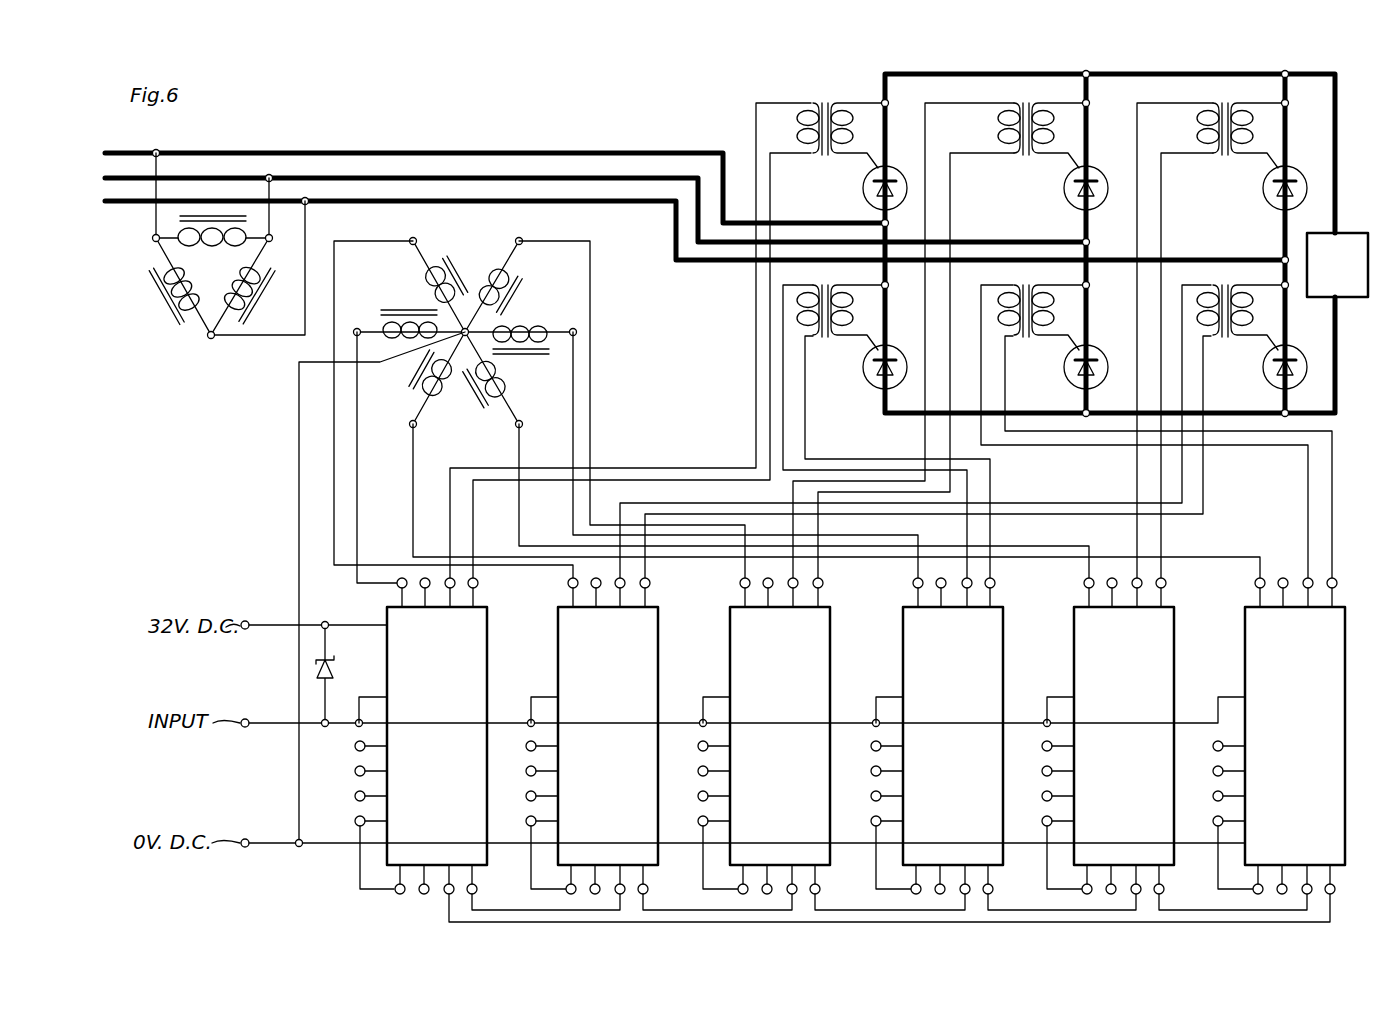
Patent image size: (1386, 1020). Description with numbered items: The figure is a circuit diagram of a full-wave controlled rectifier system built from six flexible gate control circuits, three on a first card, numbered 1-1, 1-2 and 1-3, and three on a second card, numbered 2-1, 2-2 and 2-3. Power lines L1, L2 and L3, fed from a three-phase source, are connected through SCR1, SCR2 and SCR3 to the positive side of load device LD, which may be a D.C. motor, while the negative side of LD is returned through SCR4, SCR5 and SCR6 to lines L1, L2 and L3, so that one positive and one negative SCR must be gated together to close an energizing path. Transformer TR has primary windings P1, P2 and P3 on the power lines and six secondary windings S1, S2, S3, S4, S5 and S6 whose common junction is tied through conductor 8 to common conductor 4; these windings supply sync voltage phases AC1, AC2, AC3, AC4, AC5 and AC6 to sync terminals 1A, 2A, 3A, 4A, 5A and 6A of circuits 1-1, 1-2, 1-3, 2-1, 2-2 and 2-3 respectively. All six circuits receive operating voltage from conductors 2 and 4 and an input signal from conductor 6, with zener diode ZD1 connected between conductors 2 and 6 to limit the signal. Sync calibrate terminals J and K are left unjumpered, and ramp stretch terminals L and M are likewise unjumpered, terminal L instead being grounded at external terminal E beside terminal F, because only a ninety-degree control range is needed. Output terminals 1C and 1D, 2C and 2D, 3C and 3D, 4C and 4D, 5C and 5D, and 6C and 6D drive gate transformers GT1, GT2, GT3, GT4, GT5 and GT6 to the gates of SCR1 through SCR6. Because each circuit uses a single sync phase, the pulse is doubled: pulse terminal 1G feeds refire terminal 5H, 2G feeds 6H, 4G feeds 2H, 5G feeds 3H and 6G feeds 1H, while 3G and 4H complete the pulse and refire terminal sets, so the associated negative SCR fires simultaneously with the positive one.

The power line L1 is at (476, 182).
The power line L2 is at (577, 204).
The power line L3 is at (676, 225).
The primary winding P1 is at (236, 245).
The primary winding P2 is at (275, 287).
The primary winding P3 is at (160, 296).
The transformer TR is at (466, 321).
The secondary winding S1 is at (404, 342).
The secondary winding S2 is at (490, 280).
The secondary winding S3 is at (506, 378).
The secondary winding S4 is at (530, 328).
The secondary winding S5 is at (446, 378).
The secondary winding S6 is at (430, 285).
The sync voltage phase AC1 is at (352, 328).
The sync voltage phase AC2 is at (515, 237).
The sync voltage phase AC3 is at (534, 427).
The sync voltage phase AC4 is at (570, 328).
The sync voltage phase AC5 is at (408, 428).
The sync voltage phase AC6 is at (428, 227).
The conductor 8 is at (299, 462).
The gate transformer GT1 is at (826, 92).
The gate transformer GT2 is at (1008, 96).
The gate transformer GT3 is at (1224, 96).
The gate transformer GT4 is at (837, 278).
The gate transformer GT5 is at (1019, 280).
The gate transformer GT6 is at (1229, 281).
The silicon controlled rectifier SCR1 is at (862, 186).
The silicon controlled rectifier SCR2 is at (1063, 186).
The silicon controlled rectifier SCR3 is at (1262, 187).
The silicon controlled rectifier SCR4 is at (866, 373).
The silicon controlled rectifier SCR5 is at (1066, 373).
The silicon controlled rectifier SCR6 is at (1266, 373).
The load device LD is at (1352, 233).
The conductor 2 is at (272, 622).
The conductor 6 is at (274, 718).
The common conductor 4 is at (272, 840).
The zener diode ZD1 is at (333, 670).
The sync calibrate external terminal K is at (354, 746).
The sync calibrate external terminal J is at (354, 771).
The ramp stretch external terminal M is at (354, 796).
The ramp stretch external terminal L is at (354, 821).
The external terminal E is at (395, 894).
The module terminal F is at (420, 895).
The gate control circuit 1-1 is at (437, 736).
The gate control circuit 2-3 is at (608, 736).
The gate control circuit 1-2 is at (780, 736).
The gate control circuit 2-1 is at (953, 736).
The gate control circuit 1-3 is at (1124, 736).
The gate control circuit 2-2 is at (1295, 736).
The sync terminal 1A is at (397, 586).
The output terminal 1C is at (449, 589).
The output terminal 1D is at (478, 587).
The pulse terminal 1G is at (446, 895).
The refire terminal 1H is at (483, 886).
The sync terminal 6A is at (568, 584).
The output terminal 6C is at (619, 589).
The output terminal 6D is at (650, 587).
The pulse terminal 6G is at (648, 891).
The refire terminal 6H is at (620, 884).
The sync terminal 2A is at (740, 584).
The output terminal 2C is at (792, 589).
The output terminal 2D is at (823, 587).
The pulse terminal 2G is at (792, 884).
The refire terminal 2H is at (820, 891).
The sync terminal 4A is at (913, 584).
The output terminal 4C is at (966, 589).
The output terminal 4D is at (995, 587).
The pulse terminal 4G is at (965, 884).
The refire terminal 4H is at (993, 891).
The sync terminal 3A is at (1084, 584).
The output terminal 3C is at (1136, 589).
The output terminal 3D is at (1166, 587).
The pulse terminal 3G is at (1136, 884).
The refire terminal 3H is at (1164, 891).
The sync terminal 5A is at (1255, 584).
The output terminal 5C is at (1307, 589).
The output terminal 5D is at (1337, 587).
The pulse terminal 5G is at (1307, 884).
The refire terminal 5H is at (1335, 891).